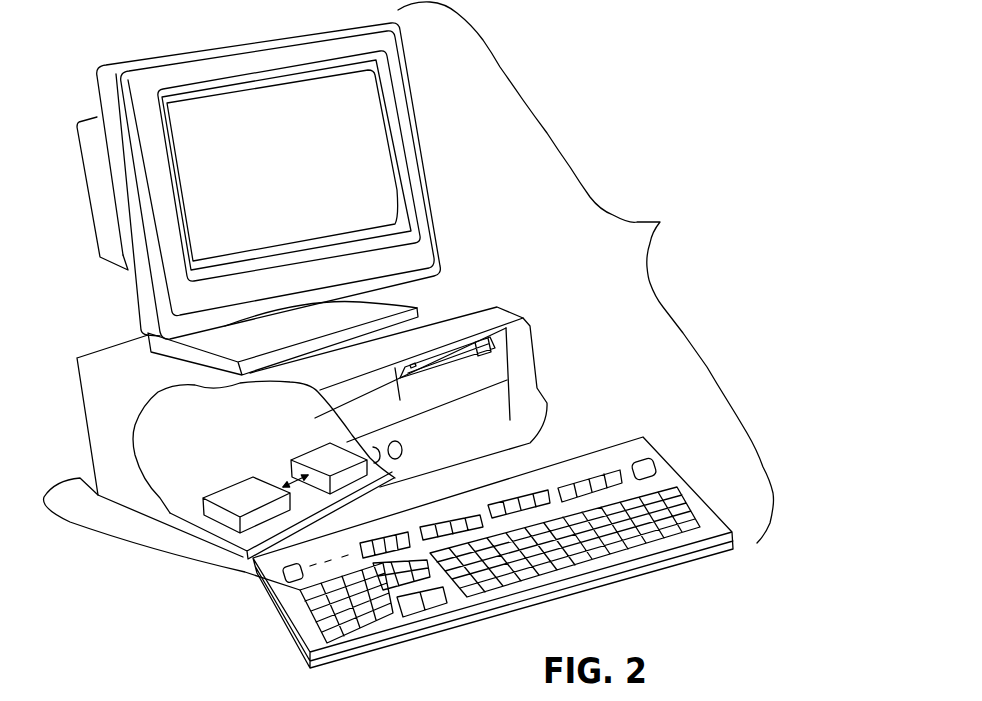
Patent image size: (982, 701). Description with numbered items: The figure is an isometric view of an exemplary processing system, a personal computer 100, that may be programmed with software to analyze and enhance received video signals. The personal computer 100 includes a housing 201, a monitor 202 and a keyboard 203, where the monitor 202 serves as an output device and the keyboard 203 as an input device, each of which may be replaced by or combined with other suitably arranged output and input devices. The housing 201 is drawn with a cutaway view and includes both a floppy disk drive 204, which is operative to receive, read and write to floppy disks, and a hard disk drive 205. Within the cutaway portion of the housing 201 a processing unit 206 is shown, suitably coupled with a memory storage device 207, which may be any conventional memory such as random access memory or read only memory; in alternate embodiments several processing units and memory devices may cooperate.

The personal computer 100 is at (586, 272).
The housing 201 is at (515, 313).
The monitor 202 is at (128, 287).
The keyboard 203 is at (688, 433).
The floppy disk drive 204 is at (497, 353).
The hard disk drive 205 is at (463, 383).
The processing unit 206 is at (307, 452).
The memory storage device 207 is at (230, 481).